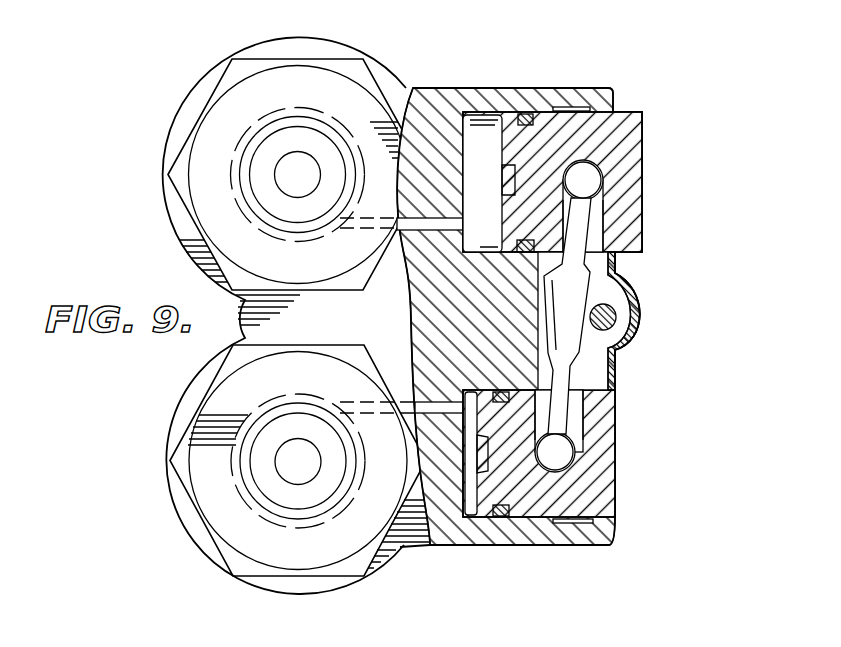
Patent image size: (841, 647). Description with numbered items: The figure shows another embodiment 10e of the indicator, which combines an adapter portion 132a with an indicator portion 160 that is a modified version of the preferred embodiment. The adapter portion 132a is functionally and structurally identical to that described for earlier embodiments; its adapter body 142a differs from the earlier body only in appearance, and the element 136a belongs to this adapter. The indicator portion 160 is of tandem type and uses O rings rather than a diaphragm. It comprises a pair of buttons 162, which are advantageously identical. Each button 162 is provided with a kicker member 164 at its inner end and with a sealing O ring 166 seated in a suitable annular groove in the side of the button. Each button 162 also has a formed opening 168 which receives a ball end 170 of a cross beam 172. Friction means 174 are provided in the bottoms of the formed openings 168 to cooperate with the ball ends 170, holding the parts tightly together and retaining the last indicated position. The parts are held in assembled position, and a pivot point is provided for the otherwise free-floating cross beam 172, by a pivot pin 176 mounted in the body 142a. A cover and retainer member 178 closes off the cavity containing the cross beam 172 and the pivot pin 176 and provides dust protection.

The embodiment 10e is at (176, 86).
The adapter portion 132a is at (157, 212).
The adapter body 142a is at (172, 135).
The bolt 136a is at (278, 462).
The indicator portion 160 is at (538, 62).
The button 162 is at (630, 112).
The kicker member 164 is at (496, 170).
The sealing O ring 166 is at (502, 527).
The formed opening 168 is at (612, 218).
The ball end 170 is at (602, 177).
The cross beam 172 is at (598, 270).
The friction means 174 is at (614, 110).
The pivot pin 176 is at (616, 308).
The cover and retainer member 178 is at (635, 330).